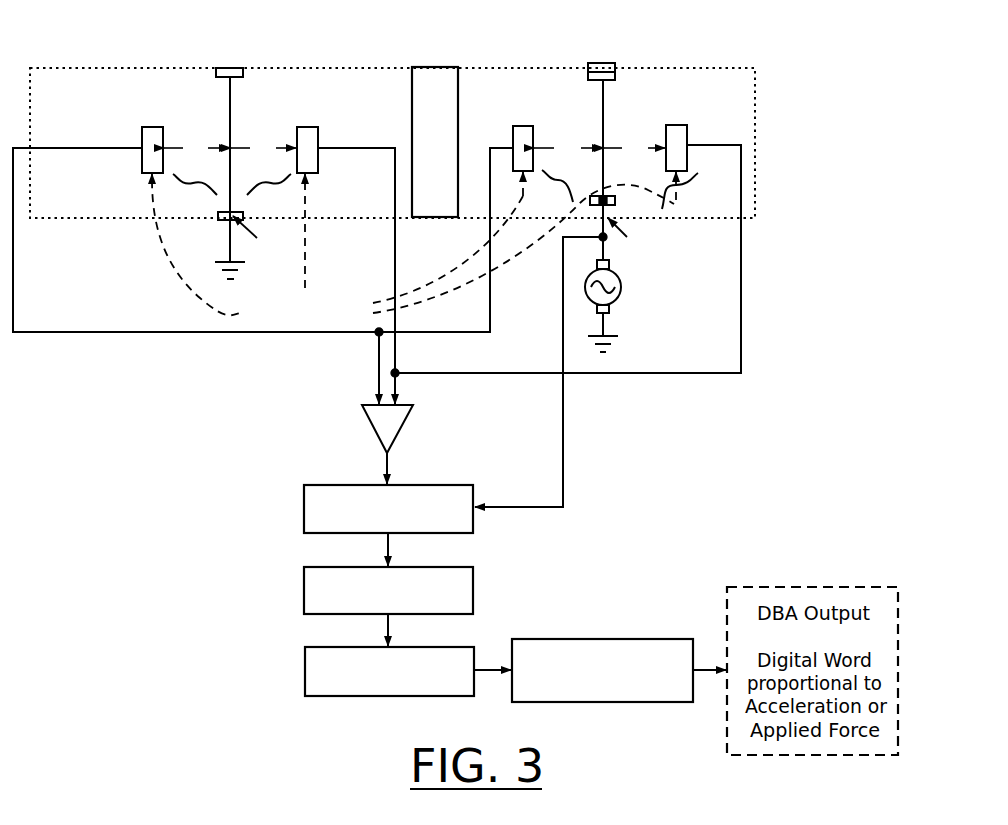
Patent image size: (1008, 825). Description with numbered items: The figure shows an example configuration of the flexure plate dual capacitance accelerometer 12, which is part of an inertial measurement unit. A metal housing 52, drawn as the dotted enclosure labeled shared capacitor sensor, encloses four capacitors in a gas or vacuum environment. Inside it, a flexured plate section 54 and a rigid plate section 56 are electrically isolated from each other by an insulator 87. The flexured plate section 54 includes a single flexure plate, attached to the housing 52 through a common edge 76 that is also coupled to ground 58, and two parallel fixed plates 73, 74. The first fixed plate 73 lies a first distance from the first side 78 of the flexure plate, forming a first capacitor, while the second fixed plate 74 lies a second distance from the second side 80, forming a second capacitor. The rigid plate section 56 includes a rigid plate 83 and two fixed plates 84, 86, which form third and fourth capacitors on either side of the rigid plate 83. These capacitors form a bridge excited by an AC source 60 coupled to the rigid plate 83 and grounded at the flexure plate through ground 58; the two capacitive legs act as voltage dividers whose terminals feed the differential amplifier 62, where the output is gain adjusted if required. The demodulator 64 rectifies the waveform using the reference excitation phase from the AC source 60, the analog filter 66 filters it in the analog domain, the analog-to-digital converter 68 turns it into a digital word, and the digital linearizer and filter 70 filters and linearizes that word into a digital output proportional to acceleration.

The accelerometer 12 is at (817, 63).
The housing 52 is at (370, 67).
The flexured plate section 54 is at (296, 67).
The rigid plate section 56 is at (706, 67).
The ground 58 is at (610, 328).
The AC source 60 is at (614, 272).
The differential amplifier 62 is at (402, 430).
The demodulator 64 is at (463, 483).
The analog filter 66 is at (477, 583).
The analog-to-digital converter 68 is at (470, 643).
The digital linearizer and filter 70 is at (597, 636).
The first fixed plate 73 is at (141, 131).
The second fixed plate 74 is at (312, 124).
The common edge 76 is at (228, 67).
The first side 78 is at (228, 104).
The second side 80 is at (233, 119).
The rigid plate 83 is at (603, 102).
The fixed plate 84 is at (522, 121).
The fixed plate 86 is at (678, 121).
The insulator 87 is at (442, 70).